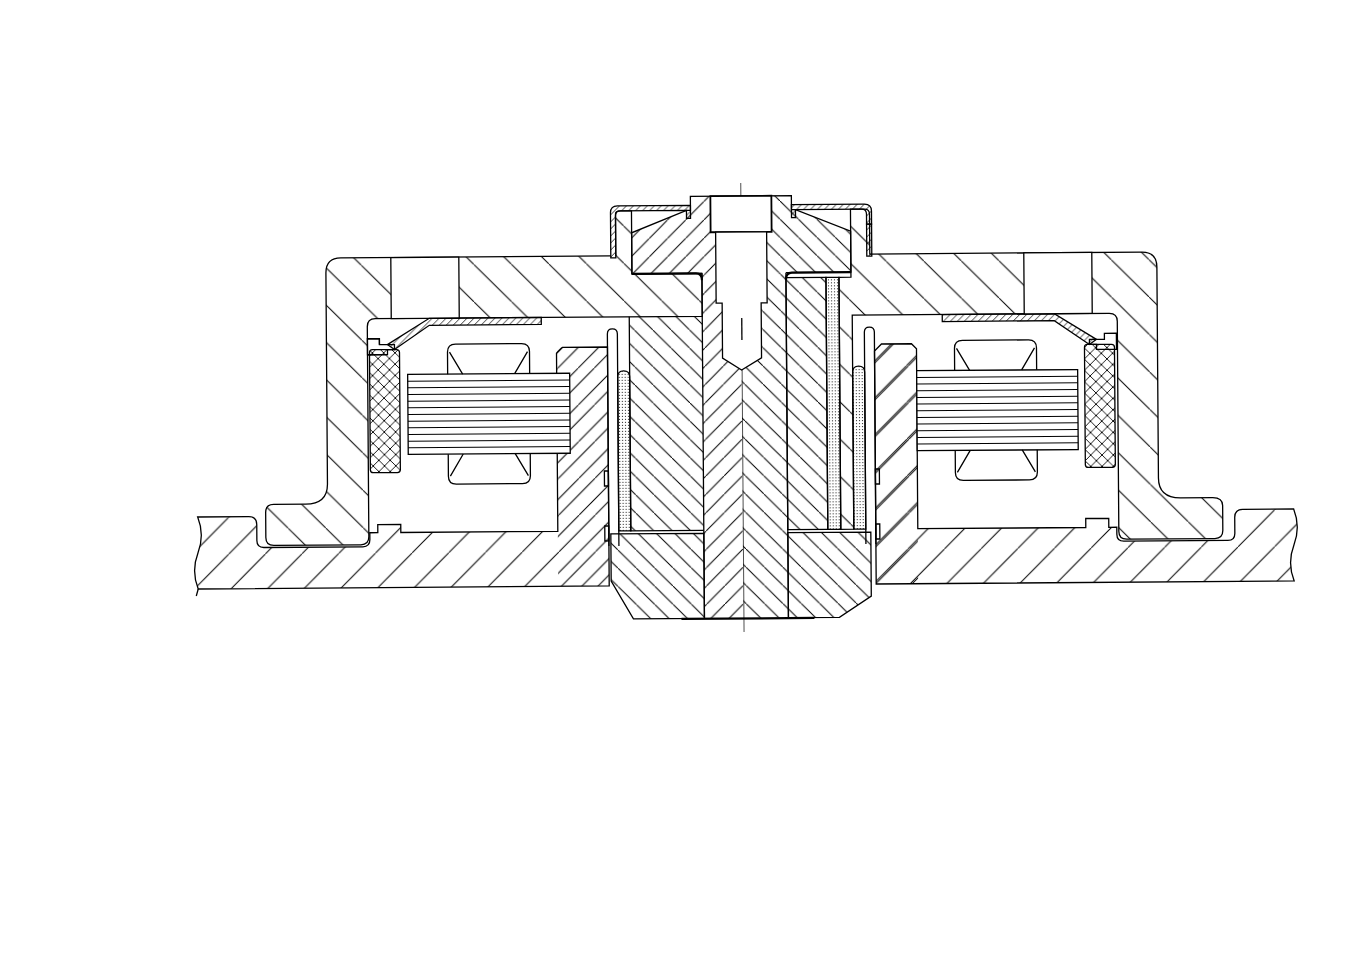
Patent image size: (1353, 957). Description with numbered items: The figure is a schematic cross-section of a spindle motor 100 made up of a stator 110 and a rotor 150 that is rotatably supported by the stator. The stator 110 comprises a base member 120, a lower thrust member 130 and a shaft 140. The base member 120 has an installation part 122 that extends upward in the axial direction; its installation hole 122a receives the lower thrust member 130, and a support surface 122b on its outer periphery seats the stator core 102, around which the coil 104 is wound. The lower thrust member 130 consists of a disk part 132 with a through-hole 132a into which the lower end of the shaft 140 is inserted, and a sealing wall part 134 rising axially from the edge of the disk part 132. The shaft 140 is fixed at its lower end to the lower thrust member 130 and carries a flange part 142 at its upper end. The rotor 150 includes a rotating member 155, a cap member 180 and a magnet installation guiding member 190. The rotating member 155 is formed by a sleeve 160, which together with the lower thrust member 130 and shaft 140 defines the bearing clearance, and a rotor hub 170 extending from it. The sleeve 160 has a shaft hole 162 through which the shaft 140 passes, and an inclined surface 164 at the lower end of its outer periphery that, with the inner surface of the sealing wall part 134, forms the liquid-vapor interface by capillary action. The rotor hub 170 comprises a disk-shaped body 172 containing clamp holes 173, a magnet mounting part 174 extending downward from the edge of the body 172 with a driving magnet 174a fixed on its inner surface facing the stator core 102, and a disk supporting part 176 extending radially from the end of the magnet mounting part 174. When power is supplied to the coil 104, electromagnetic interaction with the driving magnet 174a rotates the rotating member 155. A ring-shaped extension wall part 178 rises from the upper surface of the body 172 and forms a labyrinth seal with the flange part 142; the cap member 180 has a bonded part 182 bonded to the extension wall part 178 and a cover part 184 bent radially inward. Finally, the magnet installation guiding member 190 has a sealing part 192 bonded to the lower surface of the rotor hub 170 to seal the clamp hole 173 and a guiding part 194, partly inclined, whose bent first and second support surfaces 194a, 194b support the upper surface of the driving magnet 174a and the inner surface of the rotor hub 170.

The spindle motor 100 is at (898, 75).
The stator core 102 is at (1059, 440).
The coil 104 is at (490, 468).
The stator 110 is at (1200, 583).
The base member 120 is at (1138, 560).
The installation part 122 is at (898, 450).
The installation hole 122a is at (858, 462).
The support surface 122b is at (987, 474).
The lower thrust member 130 is at (585, 692).
The disk part 132 is at (657, 598).
The through-hole 132a is at (714, 592).
The sealing wall part 134 is at (612, 546).
The shaft 140 is at (773, 598).
The flange part 142 is at (812, 223).
The rotor 150 is at (1158, 236).
The rotating member 155 is at (960, 118).
The sleeve 160 is at (871, 258).
The shaft hole 162 is at (697, 353).
The inclined surface 164 is at (612, 450).
The rotor hub 170 is at (1137, 158).
The body 172 is at (965, 262).
The clamp hole 173 is at (428, 286).
The magnet mounting part 174 is at (1088, 252).
The driving magnet 174a is at (368, 431).
The disk supporting part 176 is at (1139, 389).
The extension wall part 178 is at (631, 222).
The cap member 180 is at (827, 157).
The bonded part 182 is at (873, 228).
The cover part 184 is at (834, 206).
The magnet installation guiding member 190 is at (232, 226).
The sealing part 192 is at (405, 335).
The guiding part 194 is at (363, 337).
The first support surface 194a is at (368, 360).
The second support surface 194b is at (373, 351).